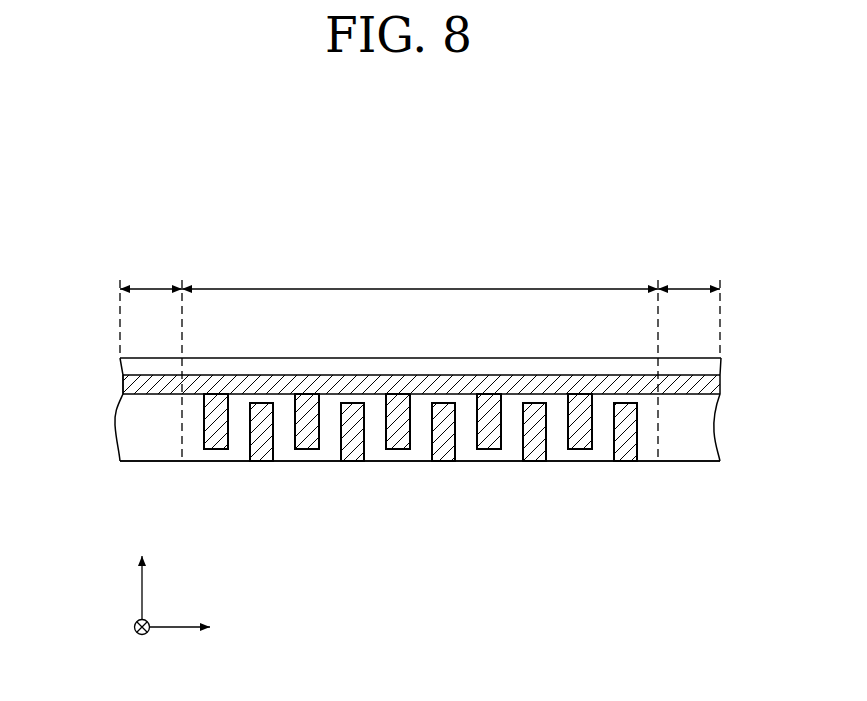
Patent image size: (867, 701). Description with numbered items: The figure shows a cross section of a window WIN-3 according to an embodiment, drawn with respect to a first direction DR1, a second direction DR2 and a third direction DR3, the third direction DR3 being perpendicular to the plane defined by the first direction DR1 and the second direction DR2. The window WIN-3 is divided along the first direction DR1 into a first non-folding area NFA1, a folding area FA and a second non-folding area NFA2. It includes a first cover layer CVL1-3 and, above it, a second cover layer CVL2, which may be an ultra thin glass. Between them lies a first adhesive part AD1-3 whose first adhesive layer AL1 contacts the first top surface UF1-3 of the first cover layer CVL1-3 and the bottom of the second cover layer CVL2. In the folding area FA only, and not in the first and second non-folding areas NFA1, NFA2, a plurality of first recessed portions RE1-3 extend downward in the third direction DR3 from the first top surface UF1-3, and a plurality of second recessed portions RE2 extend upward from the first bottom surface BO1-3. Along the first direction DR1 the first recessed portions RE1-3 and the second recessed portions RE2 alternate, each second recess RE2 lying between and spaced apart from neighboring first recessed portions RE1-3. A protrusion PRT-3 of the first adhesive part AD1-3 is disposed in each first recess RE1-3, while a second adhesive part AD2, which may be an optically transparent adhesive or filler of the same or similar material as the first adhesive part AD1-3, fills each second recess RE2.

The window WIN-3 is at (622, 219).
The second cover layer CVL2 is at (705, 369).
The first adhesive layer AL1 is at (130, 380).
The first top surface UF1-3 is at (130, 384).
The first adhesive part AD1-3 is at (708, 384).
The protrusion PRT-3 is at (214, 438).
The first recessed portion RE1-3 is at (578, 441).
The second adhesive part AD2 is at (262, 452).
The second recessed portion RE2 is at (532, 447).
The first cover layer CVL1-3 is at (705, 427).
The first bottom surface BO1-3 is at (137, 462).
The first non-folding area NFA1 is at (151, 273).
The folding area FA is at (420, 273).
The second non-folding area NFA2 is at (689, 273).
The first direction DR1 is at (196, 629).
The second direction DR2 is at (142, 642).
The third direction DR3 is at (142, 578).